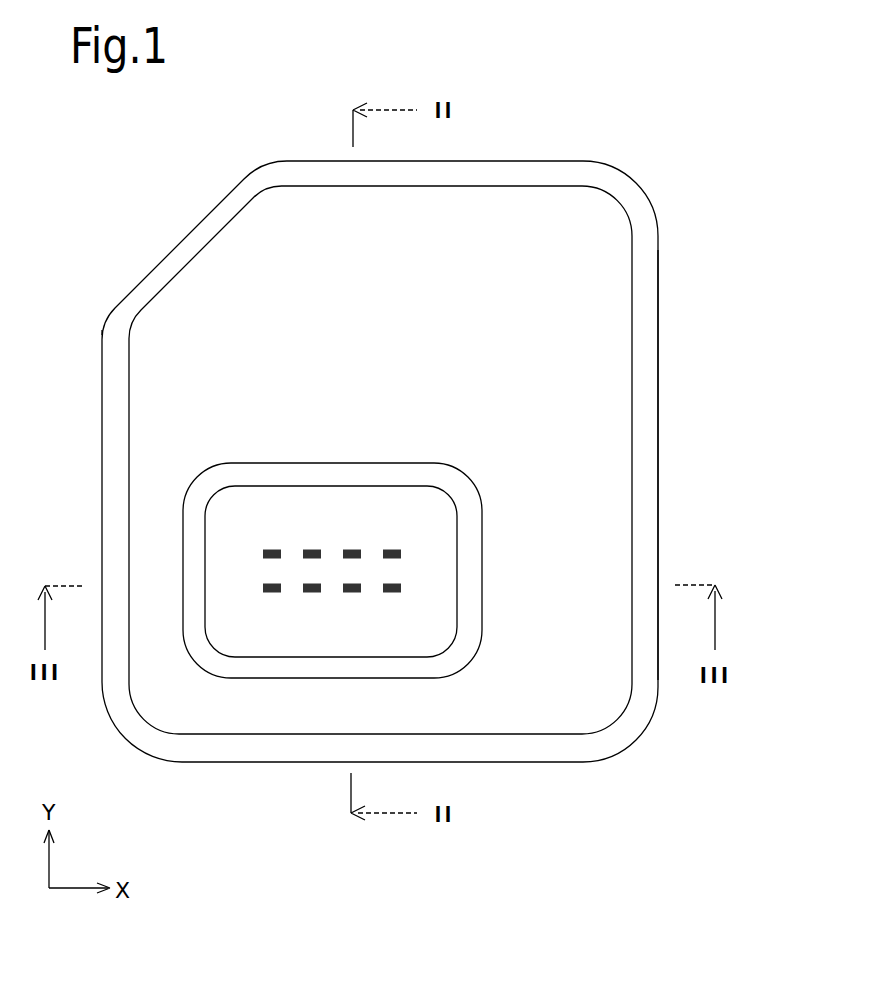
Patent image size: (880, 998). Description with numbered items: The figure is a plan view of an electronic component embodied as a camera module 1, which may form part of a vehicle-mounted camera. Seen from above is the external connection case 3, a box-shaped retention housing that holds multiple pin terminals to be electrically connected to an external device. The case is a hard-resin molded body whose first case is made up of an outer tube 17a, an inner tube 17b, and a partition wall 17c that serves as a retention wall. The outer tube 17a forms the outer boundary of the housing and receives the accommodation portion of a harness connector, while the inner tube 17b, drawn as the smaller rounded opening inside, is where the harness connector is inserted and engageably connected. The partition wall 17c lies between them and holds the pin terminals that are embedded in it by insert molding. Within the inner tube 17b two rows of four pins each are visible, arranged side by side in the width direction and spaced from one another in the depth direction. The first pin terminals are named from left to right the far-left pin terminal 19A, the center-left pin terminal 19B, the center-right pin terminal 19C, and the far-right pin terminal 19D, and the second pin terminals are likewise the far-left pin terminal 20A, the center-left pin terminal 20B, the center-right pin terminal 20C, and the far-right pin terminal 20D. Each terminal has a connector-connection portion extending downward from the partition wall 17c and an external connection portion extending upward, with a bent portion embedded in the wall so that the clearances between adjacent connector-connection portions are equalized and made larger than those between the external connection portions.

The camera module 1 is at (147, 196).
The external connection case 3 is at (658, 460).
The outer tube 17a is at (658, 378).
The inner tube 17b is at (480, 570).
The partition wall 17c is at (613, 302).
The far-left pin terminal 19A is at (272, 593).
The center-left pin terminal 19B is at (312, 593).
The center-right pin terminal 19C is at (352, 593).
The far-right pin terminal 19D is at (392, 593).
The far-left pin terminal 20A is at (272, 549).
The center-left pin terminal 20B is at (312, 549).
The center-right pin terminal 20C is at (352, 549).
The far-right pin terminal 20D is at (392, 549).